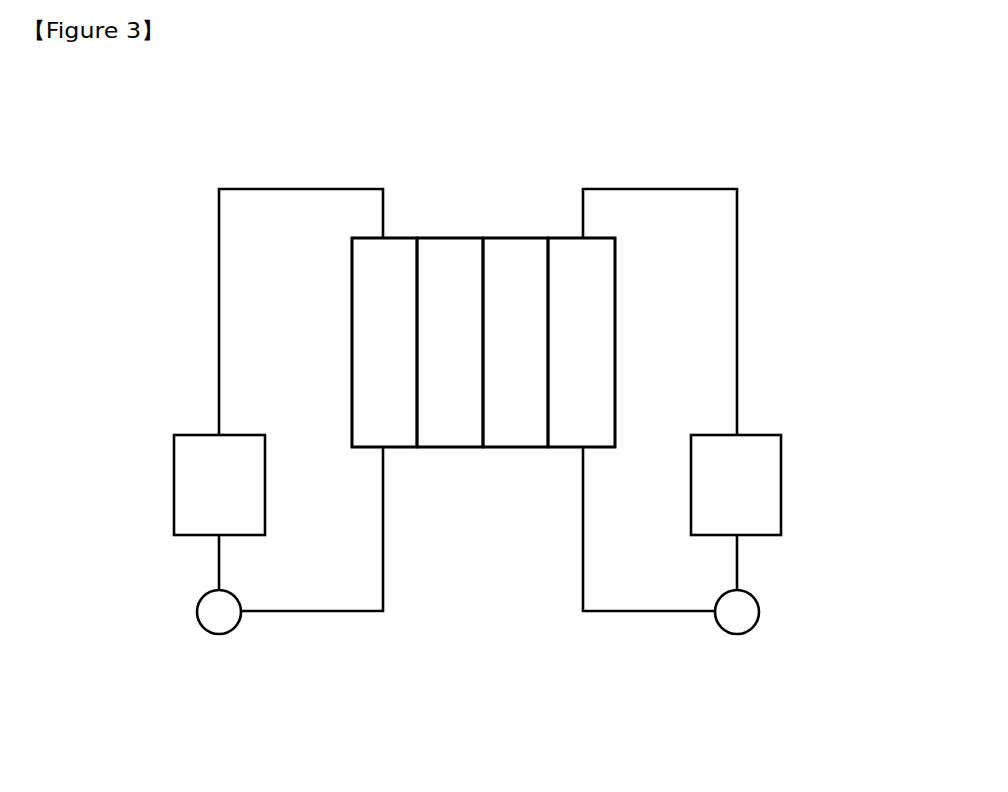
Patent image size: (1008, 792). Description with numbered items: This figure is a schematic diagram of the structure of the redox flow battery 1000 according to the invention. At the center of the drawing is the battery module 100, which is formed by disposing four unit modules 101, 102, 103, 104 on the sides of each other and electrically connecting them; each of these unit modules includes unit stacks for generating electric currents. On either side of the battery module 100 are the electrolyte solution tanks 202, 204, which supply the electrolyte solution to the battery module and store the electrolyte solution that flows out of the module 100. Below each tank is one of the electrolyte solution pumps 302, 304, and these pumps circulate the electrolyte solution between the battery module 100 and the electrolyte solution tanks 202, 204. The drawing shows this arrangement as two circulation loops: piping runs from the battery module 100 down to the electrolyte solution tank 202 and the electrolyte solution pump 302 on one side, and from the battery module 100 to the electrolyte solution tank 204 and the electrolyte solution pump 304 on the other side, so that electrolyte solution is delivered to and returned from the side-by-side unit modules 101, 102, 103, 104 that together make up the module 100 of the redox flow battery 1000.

The redox flow battery 1000 is at (557, 722).
The battery module 100 is at (453, 237).
The unit module 101 is at (395, 427).
The unit module 102 is at (461, 427).
The unit module 103 is at (527, 427).
The unit module 104 is at (594, 427).
The electrolyte solution tank 202 is at (174, 489).
The electrolyte solution tank 204 is at (782, 494).
The electrolyte solution pump 302 is at (197, 612).
The electrolyte solution pump 304 is at (758, 613).